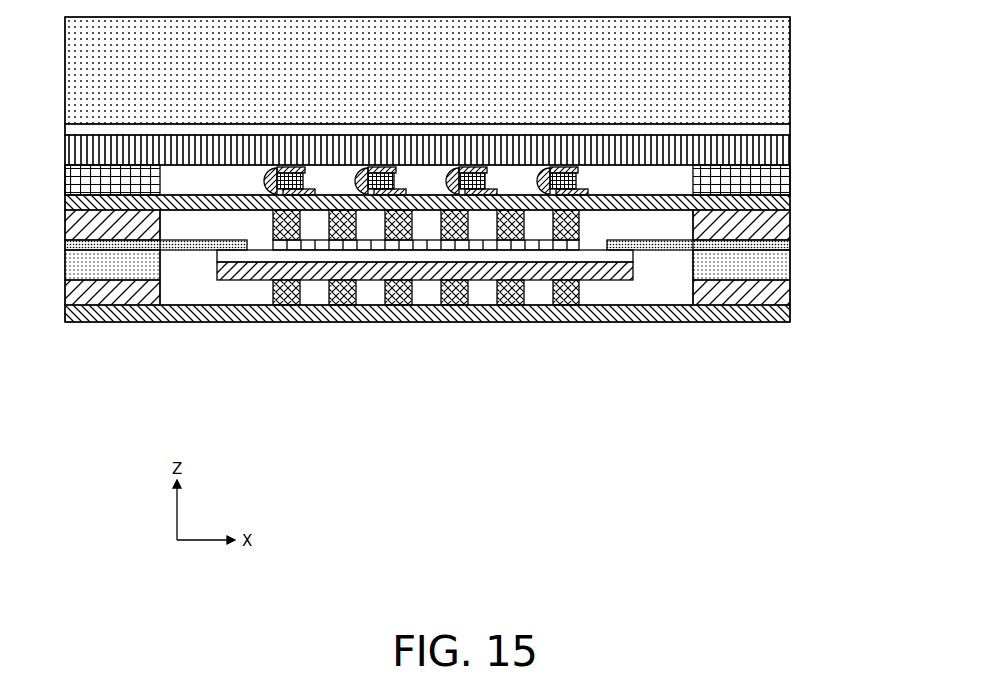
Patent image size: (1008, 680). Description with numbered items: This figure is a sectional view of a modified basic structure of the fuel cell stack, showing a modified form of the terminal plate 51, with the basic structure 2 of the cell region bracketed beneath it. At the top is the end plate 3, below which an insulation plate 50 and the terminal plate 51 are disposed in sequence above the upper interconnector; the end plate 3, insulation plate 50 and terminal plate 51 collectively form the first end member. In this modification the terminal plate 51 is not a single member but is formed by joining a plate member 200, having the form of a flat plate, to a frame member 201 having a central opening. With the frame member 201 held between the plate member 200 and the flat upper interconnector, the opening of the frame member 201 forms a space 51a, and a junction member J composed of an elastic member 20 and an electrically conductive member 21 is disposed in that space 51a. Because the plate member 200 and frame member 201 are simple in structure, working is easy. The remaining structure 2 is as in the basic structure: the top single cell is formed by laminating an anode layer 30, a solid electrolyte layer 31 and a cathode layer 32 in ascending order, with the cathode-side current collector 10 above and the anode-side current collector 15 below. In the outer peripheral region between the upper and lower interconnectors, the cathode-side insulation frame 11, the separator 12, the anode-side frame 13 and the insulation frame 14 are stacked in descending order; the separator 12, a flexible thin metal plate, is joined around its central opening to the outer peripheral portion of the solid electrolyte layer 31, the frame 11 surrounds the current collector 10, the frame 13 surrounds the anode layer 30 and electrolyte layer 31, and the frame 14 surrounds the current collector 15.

The end plate 3 is at (790, 72).
The insulation plate 50 is at (790, 127).
The terminal plate 51 is at (490, 165).
The plate member 200 is at (790, 154).
The frame member 201 is at (790, 182).
The junction member J is at (427, 110).
The elastic member 20 is at (558, 165).
The electrically conductive member 21 is at (574, 165).
The space 51a is at (642, 180).
The substrate stack 2 is at (440, 335).
The cathode-side insulation frame 11 is at (790, 225).
The separator 12 is at (790, 246).
The anode-side frame 13 is at (790, 268).
The insulation frame 14 is at (790, 292).
The cathode-side current collector 10 is at (273, 223).
The anode-side current collector 15 is at (273, 292).
The anode layer 30 is at (615, 273).
The solid electrolyte layer 31 is at (588, 256).
The cathode layer 32 is at (537, 250).